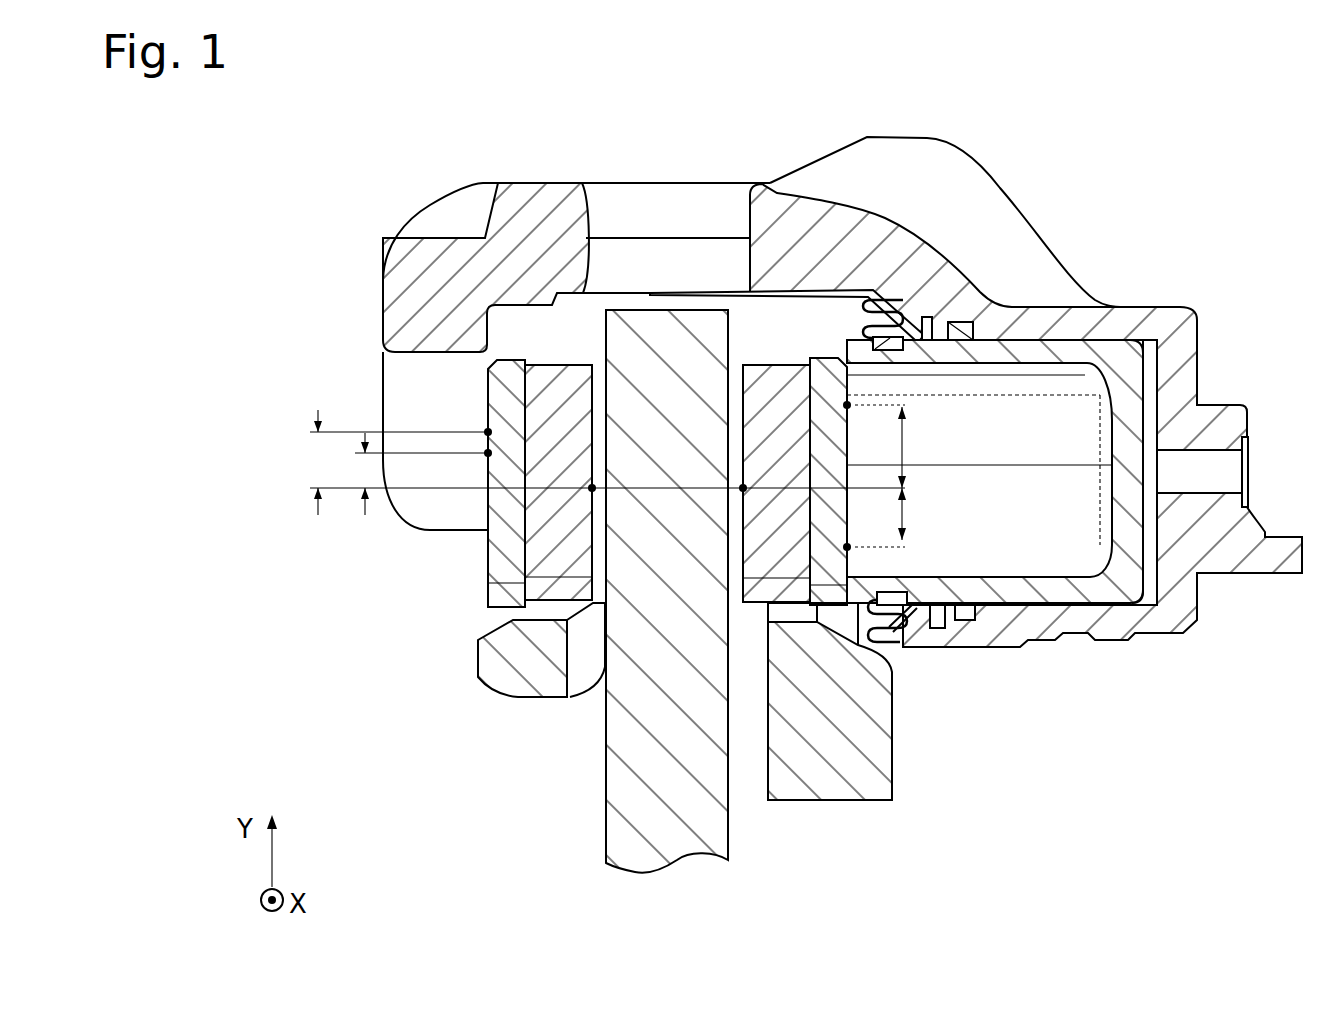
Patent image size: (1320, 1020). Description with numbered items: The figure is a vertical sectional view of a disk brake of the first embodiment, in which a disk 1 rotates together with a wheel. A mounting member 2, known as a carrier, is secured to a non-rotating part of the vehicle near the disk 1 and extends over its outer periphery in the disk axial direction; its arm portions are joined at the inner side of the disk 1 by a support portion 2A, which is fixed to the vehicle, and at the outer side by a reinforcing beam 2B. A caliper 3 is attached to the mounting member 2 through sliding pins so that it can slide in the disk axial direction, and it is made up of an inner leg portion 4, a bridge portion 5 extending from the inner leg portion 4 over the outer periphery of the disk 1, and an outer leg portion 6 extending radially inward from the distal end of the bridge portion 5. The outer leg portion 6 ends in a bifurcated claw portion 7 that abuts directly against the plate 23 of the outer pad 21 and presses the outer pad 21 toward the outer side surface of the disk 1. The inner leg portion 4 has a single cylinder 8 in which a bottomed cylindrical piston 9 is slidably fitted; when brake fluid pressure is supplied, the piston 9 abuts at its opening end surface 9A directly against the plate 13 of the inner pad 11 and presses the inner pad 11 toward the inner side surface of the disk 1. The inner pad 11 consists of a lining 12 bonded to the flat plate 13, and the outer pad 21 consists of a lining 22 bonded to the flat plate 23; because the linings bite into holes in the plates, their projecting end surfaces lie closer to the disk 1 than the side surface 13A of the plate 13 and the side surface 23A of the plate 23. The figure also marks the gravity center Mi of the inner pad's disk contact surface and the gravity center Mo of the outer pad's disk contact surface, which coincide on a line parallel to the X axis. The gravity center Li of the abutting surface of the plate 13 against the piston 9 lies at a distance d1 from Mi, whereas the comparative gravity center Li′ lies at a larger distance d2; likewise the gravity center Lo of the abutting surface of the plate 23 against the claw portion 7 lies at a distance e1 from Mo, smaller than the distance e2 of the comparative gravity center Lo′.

The disk 1 is at (614, 811).
The mounting member 2 is at (904, 760).
The support portion 2A is at (827, 783).
The reinforcing beam 2B is at (507, 677).
The caliper 3 is at (740, 172).
The inner leg portion 4 is at (953, 288).
The bridge portion 5 is at (617, 196).
The outer leg portion 6 is at (400, 292).
The claw portion 7 is at (388, 386).
The cylinder 8 is at (1080, 604).
The piston 9 is at (990, 606).
The opening end surface 9A is at (845, 335).
The inner pad 11 is at (834, 344).
The lining 12 is at (752, 368).
The plate 13 is at (826, 356).
The side surface 13A is at (858, 571).
The outer pad 21 is at (461, 371).
The lining 22 is at (552, 385).
The plate 23 is at (486, 552).
The side surface 23A is at (486, 566).
The gravity center position of disk contact surface of outer pad Mo is at (594, 487).
The gravity center position of disk contact surface of inner pad Mi is at (741, 490).
The gravity center position of contact area of outer pad Lo is at (490, 453).
The gravity center position of contact area of outer pad in comparative example Lo′ is at (488, 430).
The gravity center position of contact area of inner pad Li is at (845, 547).
The gravity center position of contact area of inner pad in comparative example Li′ is at (849, 406).
The distance d1 is at (912, 518).
The distance d2 is at (912, 446).
The distance e1 is at (381, 484).
The distance e2 is at (301, 473).